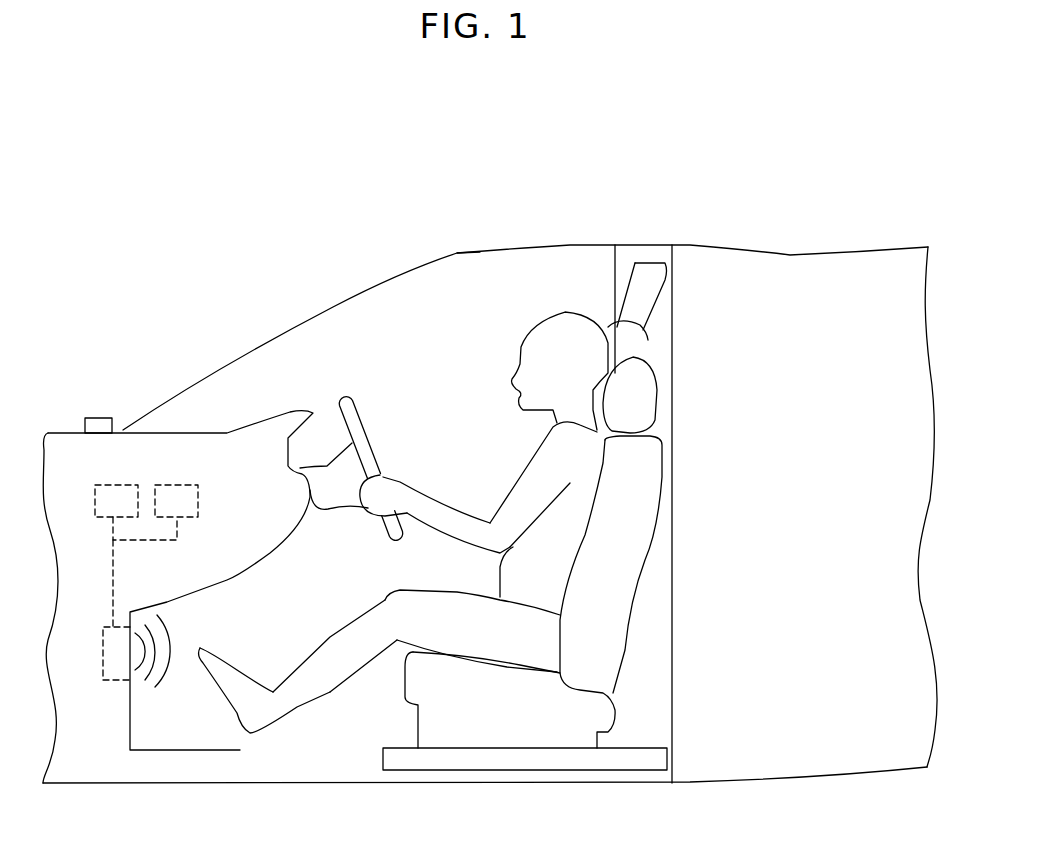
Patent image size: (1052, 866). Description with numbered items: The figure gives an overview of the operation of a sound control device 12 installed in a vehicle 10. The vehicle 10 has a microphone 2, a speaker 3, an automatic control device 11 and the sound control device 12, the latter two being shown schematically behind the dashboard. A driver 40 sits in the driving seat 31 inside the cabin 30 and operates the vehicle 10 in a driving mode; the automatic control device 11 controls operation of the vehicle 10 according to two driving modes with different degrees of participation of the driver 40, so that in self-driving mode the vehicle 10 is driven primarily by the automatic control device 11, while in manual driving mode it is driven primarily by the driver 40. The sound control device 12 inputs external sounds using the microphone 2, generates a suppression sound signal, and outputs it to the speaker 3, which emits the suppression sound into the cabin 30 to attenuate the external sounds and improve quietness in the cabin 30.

The vehicle 10 is at (823, 222).
The cabin 30 is at (740, 273).
The driving seat 31 is at (643, 477).
The driver 40 is at (560, 327).
The microphone 2 is at (99, 418).
The automatic control device 11 is at (165, 485).
The sound control device 12 is at (100, 485).
The speaker 3 is at (103, 640).